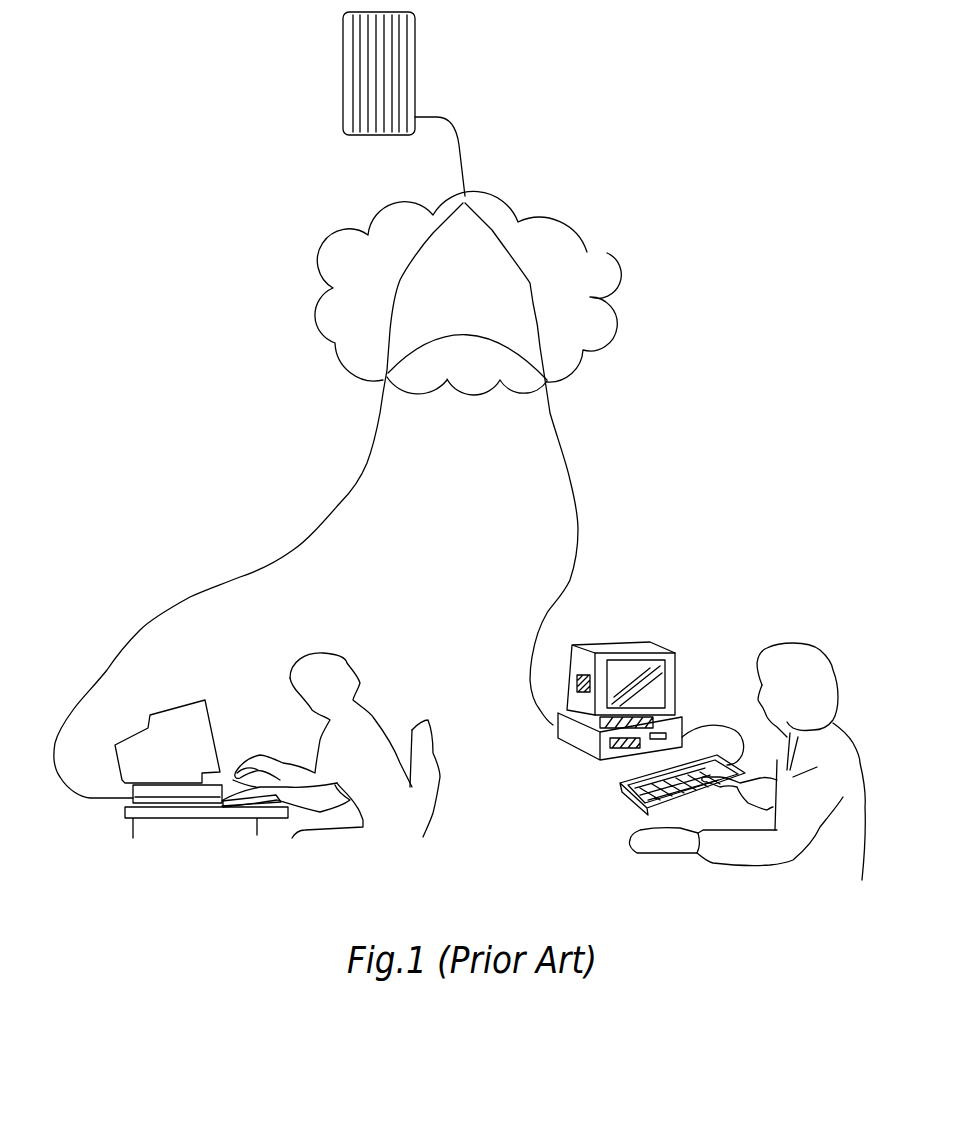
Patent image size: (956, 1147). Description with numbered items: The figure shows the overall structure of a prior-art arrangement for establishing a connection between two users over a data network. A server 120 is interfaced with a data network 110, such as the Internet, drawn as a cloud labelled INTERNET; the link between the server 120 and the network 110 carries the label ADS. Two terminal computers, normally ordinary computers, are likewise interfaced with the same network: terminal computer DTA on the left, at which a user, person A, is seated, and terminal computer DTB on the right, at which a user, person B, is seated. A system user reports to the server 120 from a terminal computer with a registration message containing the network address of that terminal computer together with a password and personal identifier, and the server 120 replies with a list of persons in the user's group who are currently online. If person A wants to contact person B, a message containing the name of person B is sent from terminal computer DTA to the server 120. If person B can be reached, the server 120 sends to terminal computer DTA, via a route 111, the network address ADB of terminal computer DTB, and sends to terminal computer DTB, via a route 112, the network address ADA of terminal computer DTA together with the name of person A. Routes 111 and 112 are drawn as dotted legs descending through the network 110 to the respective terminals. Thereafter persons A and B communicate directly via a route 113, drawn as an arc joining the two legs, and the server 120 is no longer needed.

The server 120 is at (343, 68).
The advertisement server connection ADS is at (443, 143).
The data network 110 is at (560, 222).
The route 111 is at (398, 290).
The route 112 is at (532, 290).
The route 113 is at (488, 335).
The network address of terminal computer DTA ADA is at (167, 726).
The terminal computer DTA is at (157, 798).
The person A is at (330, 668).
The network address of terminal computer DTB ADB is at (638, 669).
The terminal computer DTB is at (587, 743).
The person B is at (802, 660).